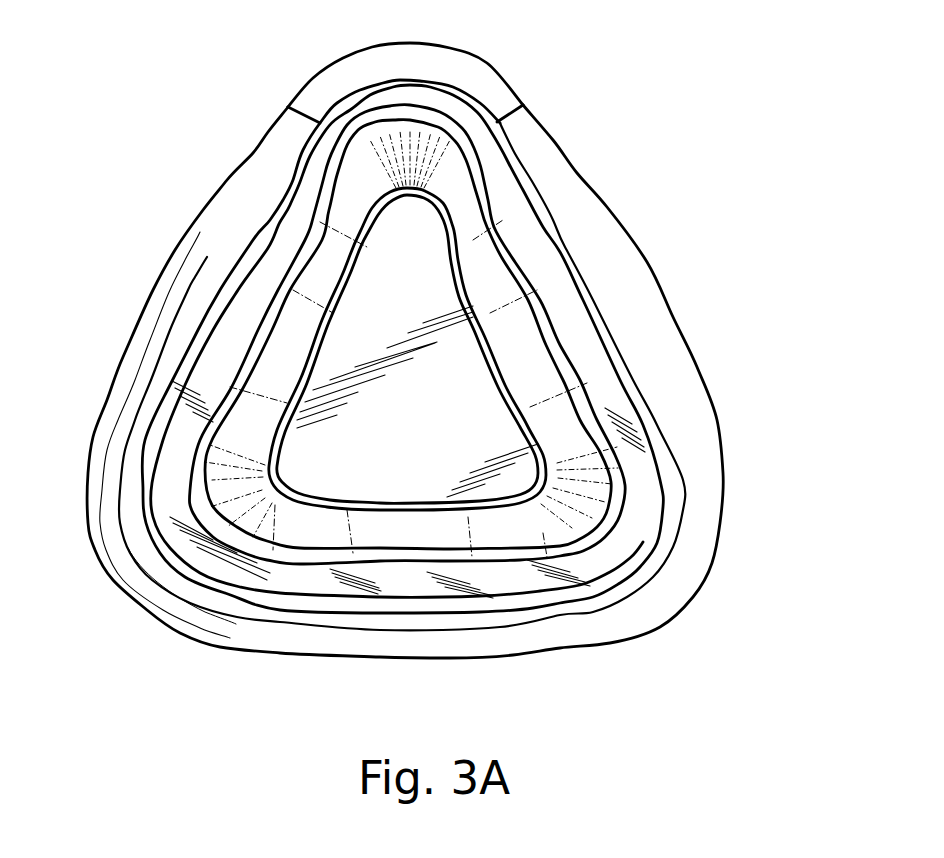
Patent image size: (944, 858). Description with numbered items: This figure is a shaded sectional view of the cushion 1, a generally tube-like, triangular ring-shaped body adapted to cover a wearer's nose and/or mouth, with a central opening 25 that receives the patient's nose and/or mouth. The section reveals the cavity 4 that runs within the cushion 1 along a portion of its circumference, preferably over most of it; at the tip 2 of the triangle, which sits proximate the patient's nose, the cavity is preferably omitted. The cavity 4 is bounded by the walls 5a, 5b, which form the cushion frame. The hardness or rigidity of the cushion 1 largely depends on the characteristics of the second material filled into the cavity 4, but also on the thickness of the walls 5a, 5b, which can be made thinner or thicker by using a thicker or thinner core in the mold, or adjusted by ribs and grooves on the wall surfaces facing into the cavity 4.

The cushion 1 is at (160, 185).
The tip 2 is at (472, 70).
The cavity 4 is at (633, 327).
The wall 5a is at (645, 260).
The wall 5b is at (560, 233).
The opening 25 is at (323, 490).